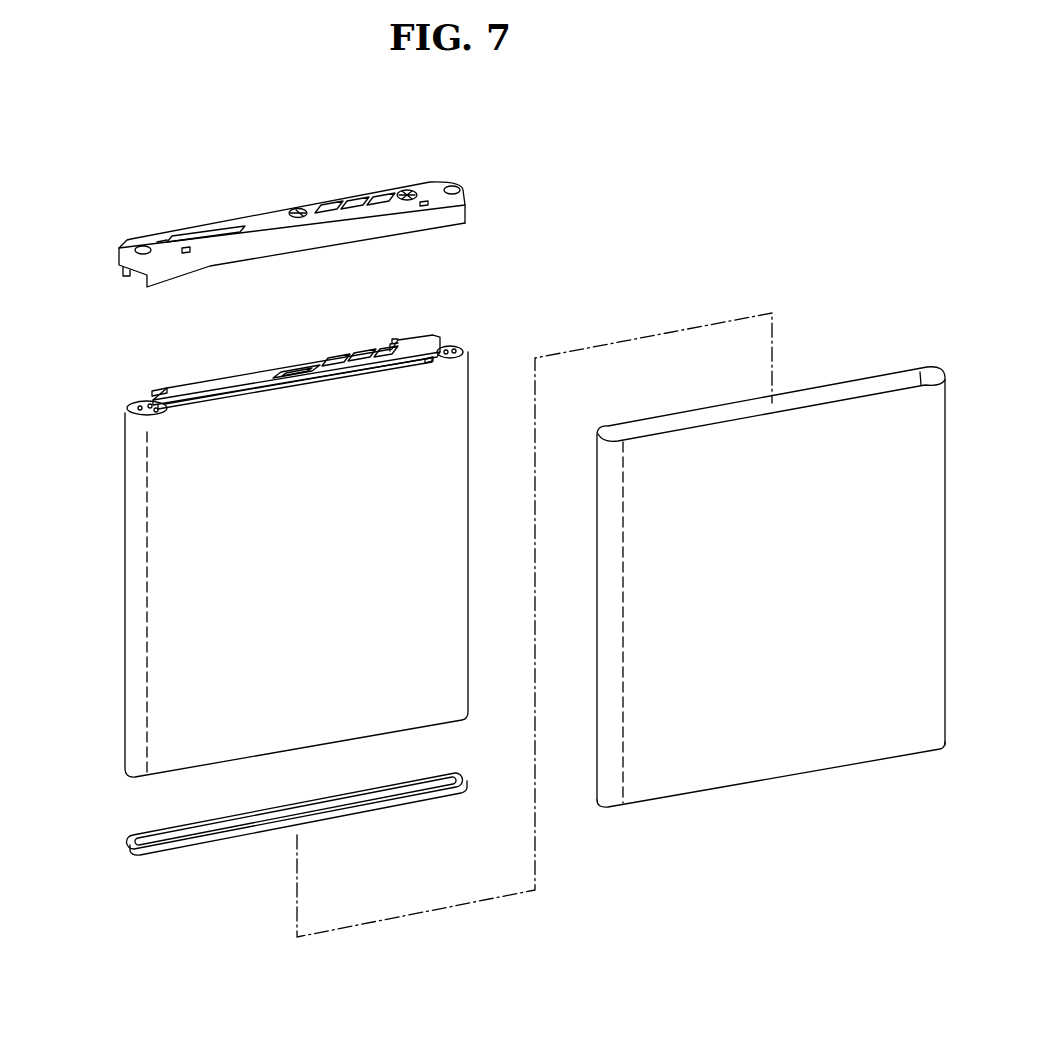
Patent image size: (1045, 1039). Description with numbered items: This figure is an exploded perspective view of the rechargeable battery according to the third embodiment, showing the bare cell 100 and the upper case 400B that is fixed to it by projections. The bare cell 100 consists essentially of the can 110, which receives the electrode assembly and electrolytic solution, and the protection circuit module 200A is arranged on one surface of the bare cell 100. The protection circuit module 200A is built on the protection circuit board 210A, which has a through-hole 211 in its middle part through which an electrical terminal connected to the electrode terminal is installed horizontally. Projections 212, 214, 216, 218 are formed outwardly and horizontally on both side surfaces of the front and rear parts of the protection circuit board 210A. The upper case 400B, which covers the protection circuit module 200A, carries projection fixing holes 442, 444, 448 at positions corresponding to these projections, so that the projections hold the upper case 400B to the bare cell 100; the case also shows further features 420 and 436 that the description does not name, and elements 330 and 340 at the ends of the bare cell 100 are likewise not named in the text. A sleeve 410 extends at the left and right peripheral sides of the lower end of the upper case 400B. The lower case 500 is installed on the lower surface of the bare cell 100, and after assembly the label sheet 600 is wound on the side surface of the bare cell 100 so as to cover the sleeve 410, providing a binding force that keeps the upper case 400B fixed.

The upper case 400B is at (115, 238).
The sleeve 410 is at (332, 246).
The terminal windows 420 is at (373, 197).
The coupling protrusion 436 is at (426, 206).
The projection fixing hole 442 is at (187, 253).
The projection fixing hole 444 is at (160, 240).
The projection fixing hole 448 is at (400, 190).
The protection circuit module 200A is at (147, 390).
The protection circuit board 210A is at (420, 340).
The through-hole 211 is at (290, 365).
The projection 212 is at (197, 401).
The projection 214 is at (162, 386).
The projection 216 is at (430, 360).
The projection 218 is at (393, 340).
The bare cell 100 is at (121, 525).
The can 110 is at (125, 640).
The end cap 330 is at (128, 407).
The end cap 340 is at (453, 348).
The lower case 500 is at (128, 845).
The label sheet 600 is at (772, 767).